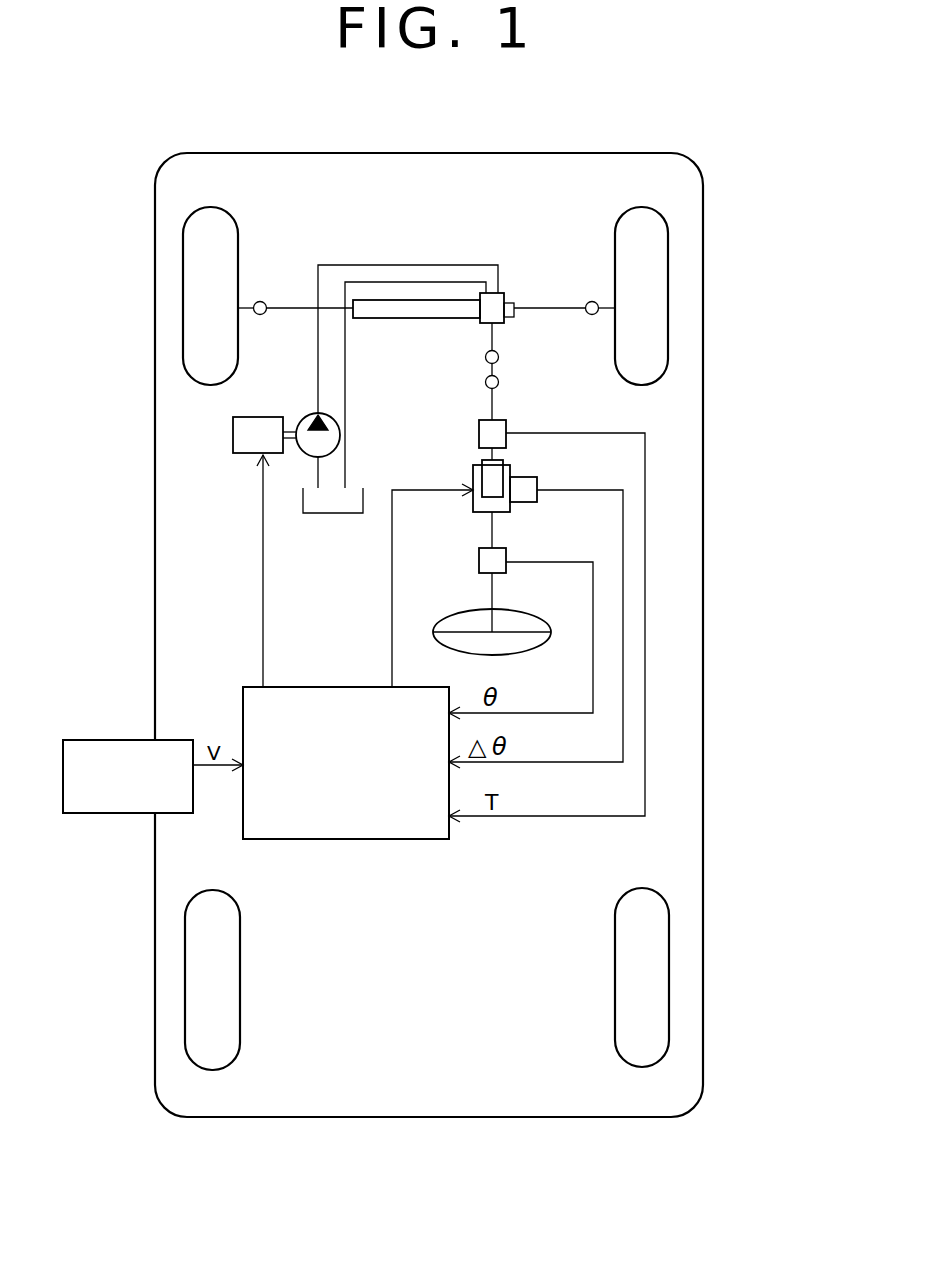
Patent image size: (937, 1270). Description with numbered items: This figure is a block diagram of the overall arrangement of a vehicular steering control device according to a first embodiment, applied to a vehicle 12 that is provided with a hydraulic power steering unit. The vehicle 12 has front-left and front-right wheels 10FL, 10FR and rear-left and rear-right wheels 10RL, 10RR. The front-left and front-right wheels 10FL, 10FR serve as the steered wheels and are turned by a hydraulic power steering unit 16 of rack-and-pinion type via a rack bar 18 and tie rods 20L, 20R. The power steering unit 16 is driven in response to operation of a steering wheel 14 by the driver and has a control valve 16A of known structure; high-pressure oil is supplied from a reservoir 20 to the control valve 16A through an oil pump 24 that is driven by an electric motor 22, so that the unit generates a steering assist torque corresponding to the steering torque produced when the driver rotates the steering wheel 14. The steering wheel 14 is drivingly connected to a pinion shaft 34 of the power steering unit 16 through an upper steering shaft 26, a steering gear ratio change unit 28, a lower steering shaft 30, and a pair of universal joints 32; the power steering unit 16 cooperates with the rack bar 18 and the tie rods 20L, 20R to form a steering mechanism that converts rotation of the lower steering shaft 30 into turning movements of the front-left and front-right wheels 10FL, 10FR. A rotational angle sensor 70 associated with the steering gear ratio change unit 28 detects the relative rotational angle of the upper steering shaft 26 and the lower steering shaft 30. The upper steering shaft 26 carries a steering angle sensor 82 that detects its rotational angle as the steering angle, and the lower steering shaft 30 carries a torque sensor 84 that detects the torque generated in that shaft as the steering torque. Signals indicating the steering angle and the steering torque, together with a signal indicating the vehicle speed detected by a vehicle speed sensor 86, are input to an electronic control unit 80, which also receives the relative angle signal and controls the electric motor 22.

The front-left wheel 10FL is at (183, 306).
The front-right wheel 10FR is at (668, 302).
The rear-left wheel 10RL is at (185, 985).
The rear-right wheel 10RR is at (669, 977).
The vehicle 12 is at (703, 520).
The steering wheel 14 is at (508, 653).
The hydraulic power steering unit 16 is at (416, 350).
The control valve 16A is at (482, 322).
The rack bar 18 is at (290, 310).
The reservoir 20 is at (333, 514).
The left tie rod 20L is at (258, 300).
The right tie rod 20R is at (590, 301).
The electric motor 22 is at (233, 438).
The oil pump 24 is at (340, 437).
The upper steering shaft 26 is at (494, 588).
The steering gear ratio change unit 28 is at (465, 503).
The lower steering shaft 30 is at (494, 401).
The universal joints 32 is at (486, 360).
The pinion shaft 34 is at (494, 335).
The rotational angle sensor 70 is at (523, 478).
The electronic control unit 80 is at (331, 820).
The steering angle sensor 82 is at (479, 560).
The torque sensor 84 is at (479, 437).
The vehicle speed sensor 86 is at (125, 740).